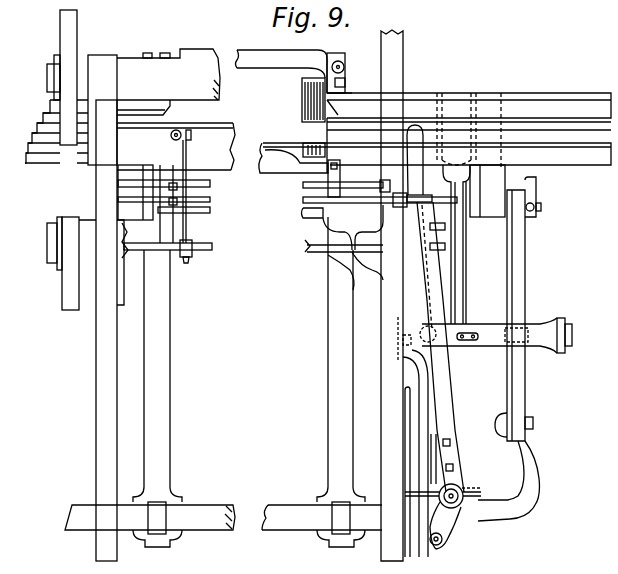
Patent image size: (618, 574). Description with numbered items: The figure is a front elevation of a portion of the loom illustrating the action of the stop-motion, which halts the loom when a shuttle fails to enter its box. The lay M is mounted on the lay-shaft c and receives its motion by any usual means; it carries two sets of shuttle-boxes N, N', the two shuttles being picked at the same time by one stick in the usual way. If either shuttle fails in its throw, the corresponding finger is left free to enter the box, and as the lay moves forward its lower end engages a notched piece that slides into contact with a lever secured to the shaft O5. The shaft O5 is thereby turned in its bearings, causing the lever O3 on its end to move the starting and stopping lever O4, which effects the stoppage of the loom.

The shuttle-box N is at (469, 130).
The shuttle-box N' is at (435, 151).
The lay M is at (161, 358).
The lay-shaft c is at (223, 524).
The lever O3 is at (415, 250).
The starting and stopping lever O4 is at (436, 305).
The shaft O5 is at (201, 247).